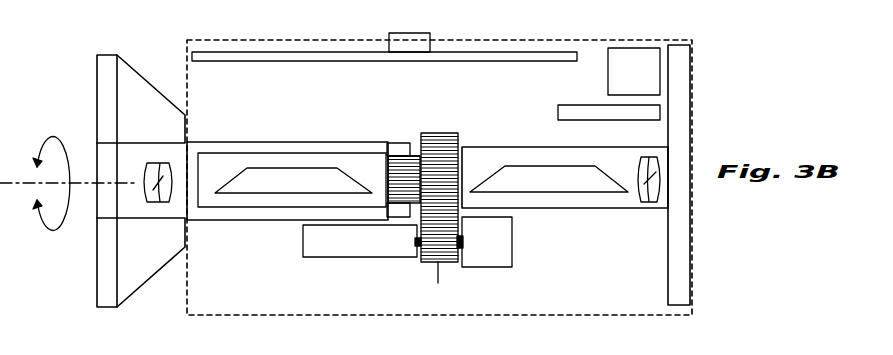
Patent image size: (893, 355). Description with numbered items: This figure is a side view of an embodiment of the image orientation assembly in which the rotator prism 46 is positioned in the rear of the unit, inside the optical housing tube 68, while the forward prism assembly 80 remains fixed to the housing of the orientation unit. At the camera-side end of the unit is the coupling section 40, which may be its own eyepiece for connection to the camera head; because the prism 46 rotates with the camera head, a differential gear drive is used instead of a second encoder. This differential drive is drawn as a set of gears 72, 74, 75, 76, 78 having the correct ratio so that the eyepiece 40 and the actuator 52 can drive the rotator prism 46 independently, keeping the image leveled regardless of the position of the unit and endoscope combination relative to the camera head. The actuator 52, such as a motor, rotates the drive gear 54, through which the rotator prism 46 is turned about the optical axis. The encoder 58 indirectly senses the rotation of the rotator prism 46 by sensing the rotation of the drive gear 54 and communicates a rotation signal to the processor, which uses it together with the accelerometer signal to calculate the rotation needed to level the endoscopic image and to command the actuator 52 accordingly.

The coupling section 40 is at (97, 97).
The optical image rotator 46 is at (272, 190).
The actuator 52 is at (329, 252).
The gear 54 is at (438, 283).
The encoder 58 is at (500, 262).
The optical housing tube 68 is at (238, 141).
The gear 72 is at (388, 170).
The gear 74 is at (392, 145).
The gear 75 is at (393, 215).
The gear 76 is at (395, 143).
The gear 78 is at (452, 133).
The forward prism assembly 80 is at (592, 200).